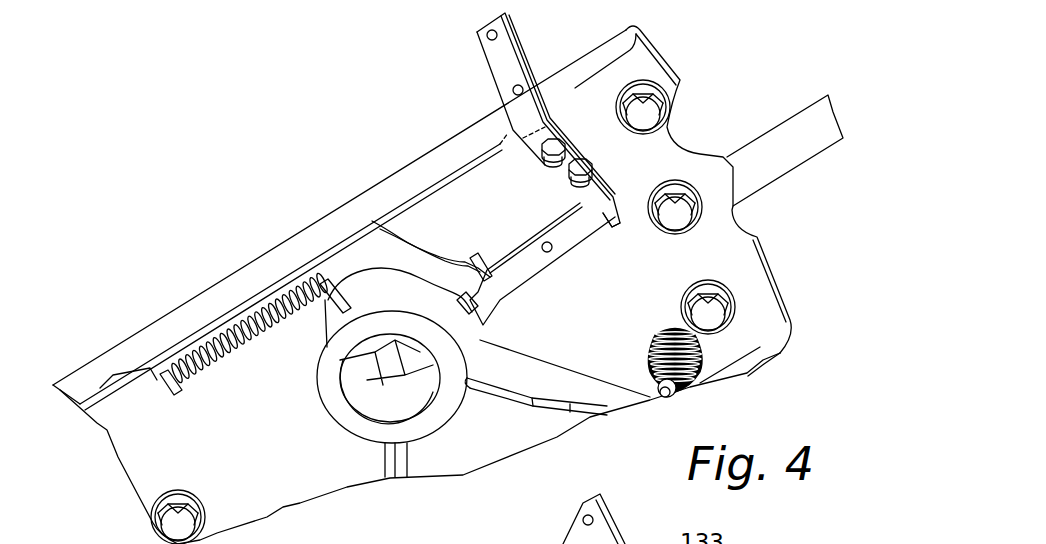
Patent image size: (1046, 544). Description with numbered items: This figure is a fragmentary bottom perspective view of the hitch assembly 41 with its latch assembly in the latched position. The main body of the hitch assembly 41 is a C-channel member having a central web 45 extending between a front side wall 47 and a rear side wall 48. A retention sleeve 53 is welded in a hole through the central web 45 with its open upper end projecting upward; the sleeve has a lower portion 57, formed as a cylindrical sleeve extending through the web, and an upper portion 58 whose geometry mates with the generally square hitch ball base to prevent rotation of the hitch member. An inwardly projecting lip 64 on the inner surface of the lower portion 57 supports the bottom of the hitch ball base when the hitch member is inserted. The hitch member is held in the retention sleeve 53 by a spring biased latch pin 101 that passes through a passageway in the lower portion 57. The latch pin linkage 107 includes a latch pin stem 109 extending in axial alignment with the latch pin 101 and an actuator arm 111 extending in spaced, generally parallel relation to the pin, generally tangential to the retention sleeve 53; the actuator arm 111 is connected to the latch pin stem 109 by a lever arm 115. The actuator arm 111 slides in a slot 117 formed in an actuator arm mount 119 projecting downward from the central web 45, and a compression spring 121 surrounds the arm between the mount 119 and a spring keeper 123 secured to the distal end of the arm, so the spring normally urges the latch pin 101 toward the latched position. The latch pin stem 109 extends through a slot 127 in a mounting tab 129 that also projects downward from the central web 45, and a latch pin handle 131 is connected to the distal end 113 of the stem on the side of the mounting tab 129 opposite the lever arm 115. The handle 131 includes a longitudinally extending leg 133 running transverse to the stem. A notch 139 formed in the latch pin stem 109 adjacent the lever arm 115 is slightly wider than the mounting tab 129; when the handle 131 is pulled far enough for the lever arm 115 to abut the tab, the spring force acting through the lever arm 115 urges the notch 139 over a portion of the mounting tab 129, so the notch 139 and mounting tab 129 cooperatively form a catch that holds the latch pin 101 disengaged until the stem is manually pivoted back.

The hitch assembly 41 is at (108, 318).
The central web 45 is at (133, 457).
The front side wall 47 is at (375, 205).
The rear side wall 48 is at (763, 363).
The retention sleeve 53 is at (427, 435).
The lower portion 57 is at (340, 362).
The upper portion 58 is at (377, 417).
The inwardly projecting lip 64 is at (357, 438).
The latch pin 101 is at (340, 352).
The latch pin linkage 107 is at (545, 324).
The latch pin stem 109 is at (533, 278).
The actuator arm 111 is at (207, 343).
The distal end 113 is at (623, 200).
The lever arm 115 is at (420, 247).
The slot 117 is at (347, 243).
The actuator arm mount 119 is at (360, 291).
The compression spring 121 is at (300, 300).
The spring keeper 123 is at (163, 400).
The slot 127 is at (627, 237).
The mounting tab 129 is at (570, 197).
The latch pin handle 131 is at (540, 25).
The longitudinally extending leg 133 is at (573, 87).
The notch 139 is at (477, 257).